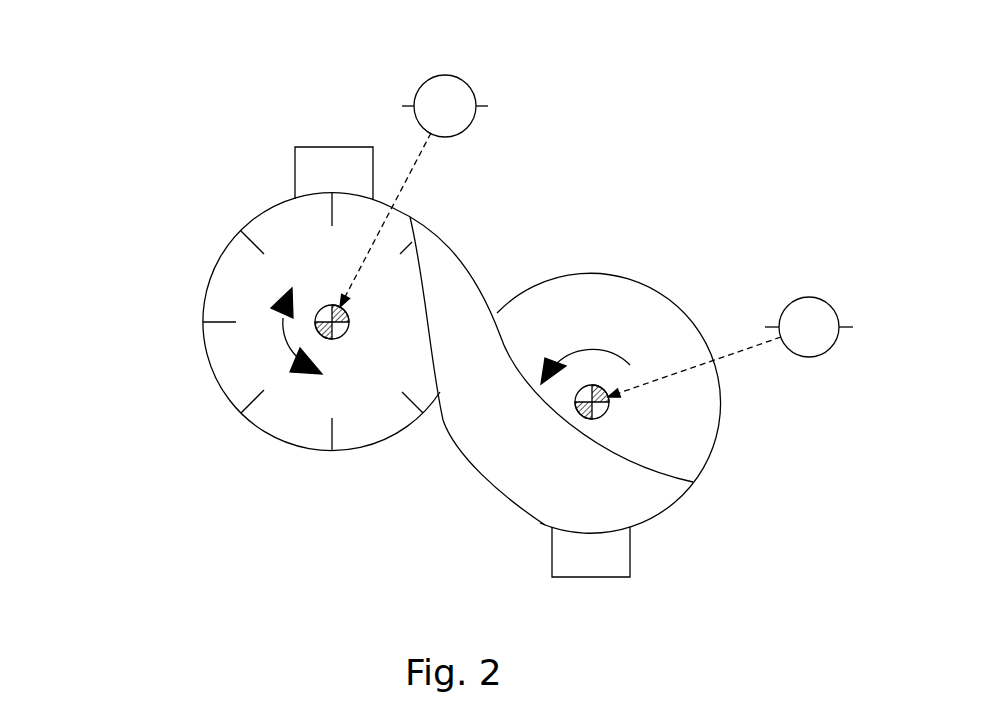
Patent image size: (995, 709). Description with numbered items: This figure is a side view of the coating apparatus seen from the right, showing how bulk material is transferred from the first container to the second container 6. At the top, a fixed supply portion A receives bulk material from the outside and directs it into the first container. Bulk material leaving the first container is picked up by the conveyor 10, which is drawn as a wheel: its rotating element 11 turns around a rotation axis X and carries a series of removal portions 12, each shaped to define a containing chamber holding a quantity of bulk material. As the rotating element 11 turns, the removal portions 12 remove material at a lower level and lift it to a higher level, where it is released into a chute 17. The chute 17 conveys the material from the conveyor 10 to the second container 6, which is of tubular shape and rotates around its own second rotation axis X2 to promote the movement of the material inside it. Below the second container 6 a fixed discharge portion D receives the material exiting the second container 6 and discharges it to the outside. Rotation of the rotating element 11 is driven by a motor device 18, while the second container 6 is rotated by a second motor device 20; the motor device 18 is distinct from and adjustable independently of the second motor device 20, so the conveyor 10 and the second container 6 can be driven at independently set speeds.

The second container 6 is at (673, 363).
The conveyor 10 is at (286, 299).
The rotating element 11 is at (217, 383).
The removal portions 12 is at (227, 268).
The chute 17 is at (497, 463).
The motor device 18 is at (468, 82).
The second motor device 20 is at (816, 297).
The supply portion A is at (337, 160).
The discharge portion D is at (590, 562).
The rotation axis X is at (349, 317).
The second rotation axis X2 is at (607, 410).